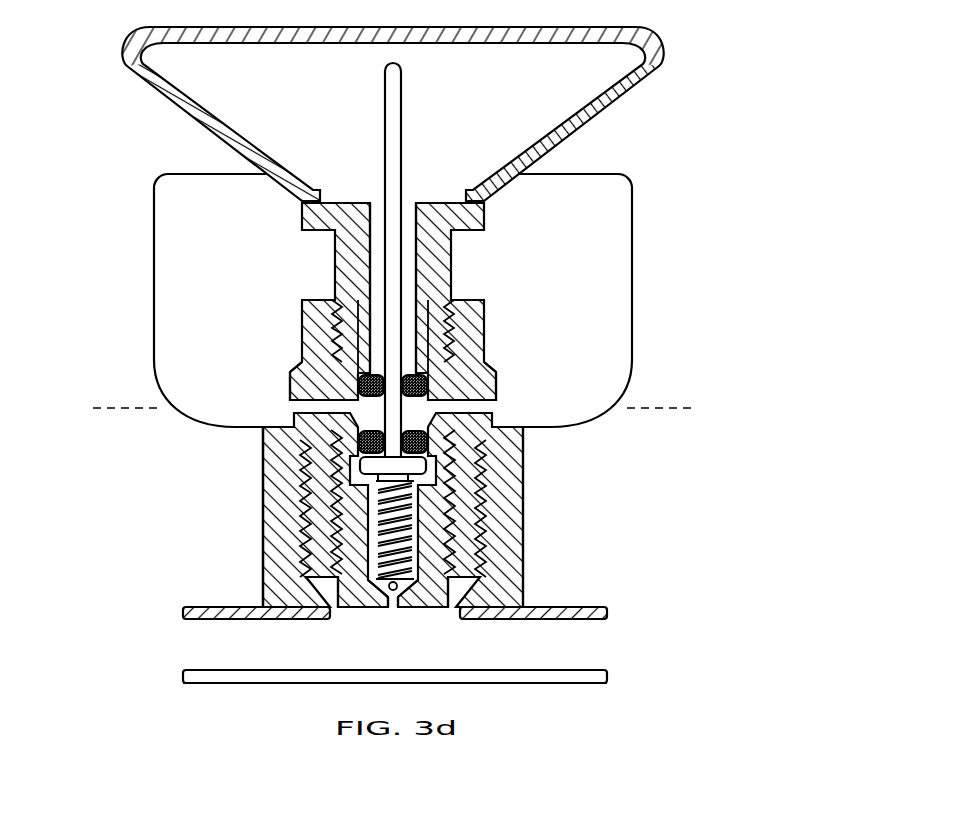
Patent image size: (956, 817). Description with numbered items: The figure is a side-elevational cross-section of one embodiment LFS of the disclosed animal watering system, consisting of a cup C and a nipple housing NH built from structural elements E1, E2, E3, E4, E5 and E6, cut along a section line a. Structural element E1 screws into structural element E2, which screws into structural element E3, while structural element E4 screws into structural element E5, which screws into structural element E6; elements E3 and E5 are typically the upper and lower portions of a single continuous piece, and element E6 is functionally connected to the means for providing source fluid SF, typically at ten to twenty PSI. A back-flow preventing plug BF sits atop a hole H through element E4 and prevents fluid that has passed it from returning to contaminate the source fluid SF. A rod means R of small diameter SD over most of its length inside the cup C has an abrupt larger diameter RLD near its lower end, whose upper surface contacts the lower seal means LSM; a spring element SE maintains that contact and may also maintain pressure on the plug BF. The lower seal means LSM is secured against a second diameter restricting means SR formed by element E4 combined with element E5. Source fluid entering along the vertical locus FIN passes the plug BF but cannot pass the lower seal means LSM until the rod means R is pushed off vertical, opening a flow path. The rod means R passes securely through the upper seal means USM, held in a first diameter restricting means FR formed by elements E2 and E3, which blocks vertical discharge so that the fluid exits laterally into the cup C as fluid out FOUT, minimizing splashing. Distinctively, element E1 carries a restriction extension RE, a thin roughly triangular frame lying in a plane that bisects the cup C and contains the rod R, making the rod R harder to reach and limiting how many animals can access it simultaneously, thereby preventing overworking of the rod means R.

The Restriction Extension RE is at (672, 40).
The embodiment of the invention system LFS is at (586, 168).
The Cup C is at (215, 190).
The Small Diameter SD is at (378, 186).
The Rod means R is at (410, 188).
The structural element E1 is at (445, 262).
The structural element E2 is at (452, 301).
The structural element E3 is at (300, 301).
The Upper Seal Means USM is at (302, 324).
The First Diameter Restricting Means FR is at (438, 398).
The Second Diameter Restricting Means SR is at (293, 377).
The Lower Seal Means LSM is at (430, 438).
The Fluid Out FOUT is at (325, 408).
The section line a is at (393, 407).
The Rod larger diameter RLD is at (365, 463).
The Nipple Housing NH is at (200, 467).
The structural element E5 is at (484, 468).
The structural element E6 is at (278, 527).
The structural element E4 is at (441, 588).
The Spring Element SE is at (410, 528).
The Back-Flow Preventing Plug BF is at (385, 594).
The Hole H is at (398, 596).
The Fluid In locus FIN is at (513, 645).
The Source Fluid SF is at (145, 647).